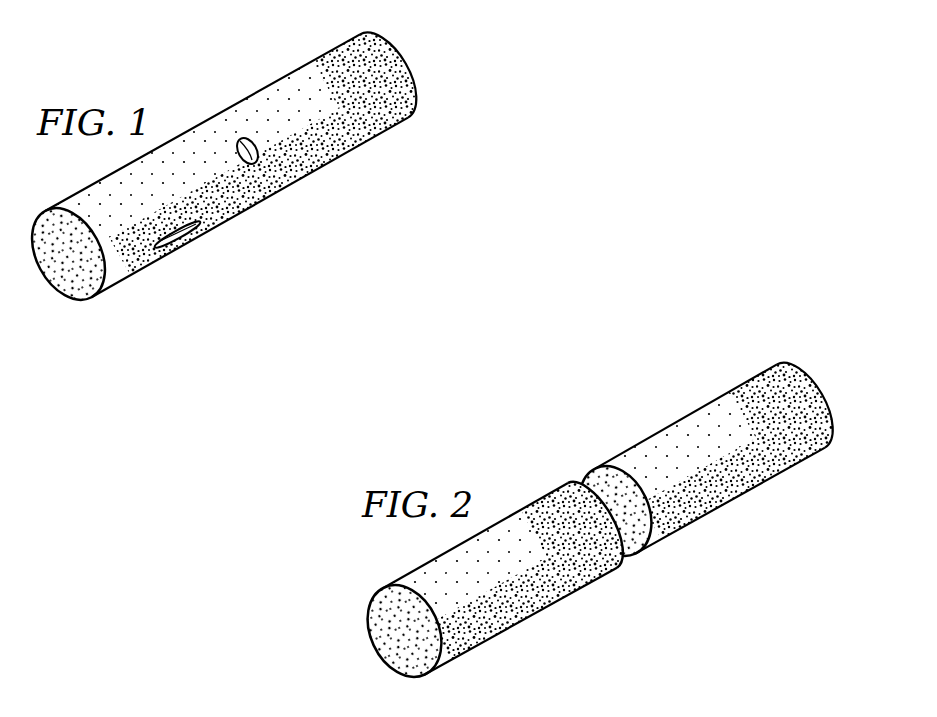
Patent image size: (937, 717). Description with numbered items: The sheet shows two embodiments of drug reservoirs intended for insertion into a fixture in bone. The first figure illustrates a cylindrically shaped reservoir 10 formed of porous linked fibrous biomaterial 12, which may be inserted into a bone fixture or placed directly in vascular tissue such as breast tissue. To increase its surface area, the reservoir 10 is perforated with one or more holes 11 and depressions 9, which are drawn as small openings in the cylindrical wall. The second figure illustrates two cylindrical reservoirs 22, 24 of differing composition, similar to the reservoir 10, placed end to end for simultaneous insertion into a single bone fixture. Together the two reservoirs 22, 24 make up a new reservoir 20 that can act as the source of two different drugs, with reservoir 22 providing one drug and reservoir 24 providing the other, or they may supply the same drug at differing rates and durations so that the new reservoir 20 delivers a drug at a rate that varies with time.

In FIG. 1, the depression 9 is at (177, 243).
In FIG. 1, the reservoir 10 is at (239, 157).
In FIG. 1, the hole 11 is at (260, 160).
In FIG. 1, the porous linked fibrous biomaterial 12 is at (263, 92).
In FIG. 2, the new reservoir 20 is at (616, 510).
In FIG. 2, the reservoir 22 is at (519, 624).
In FIG. 2, the reservoir 24 is at (680, 417).